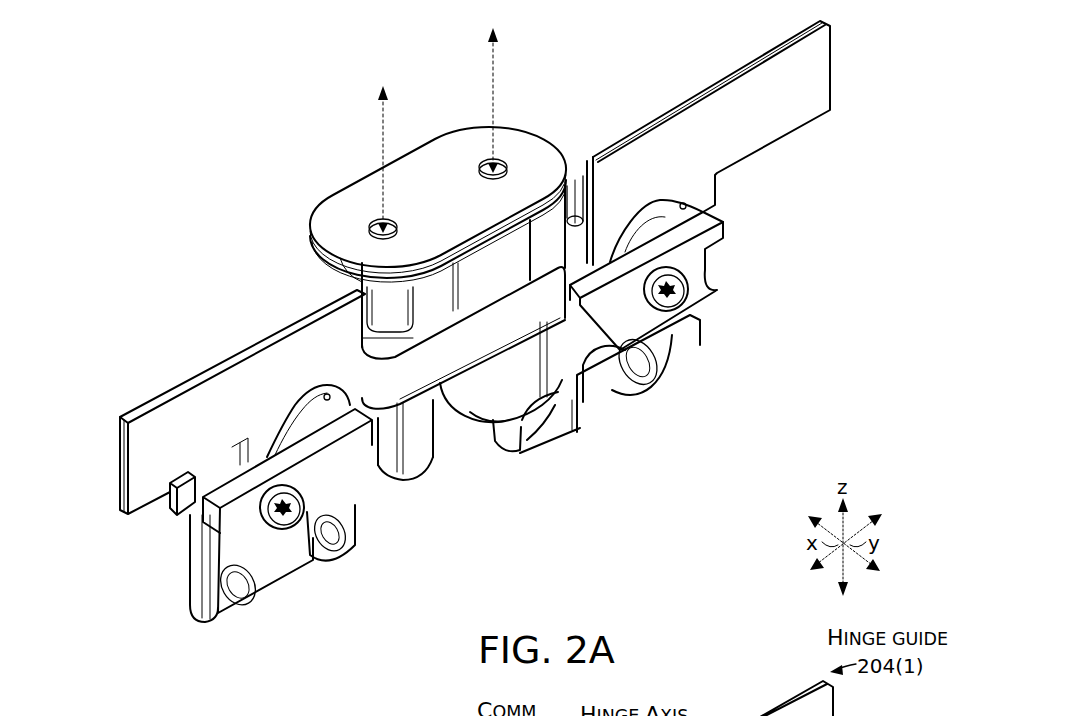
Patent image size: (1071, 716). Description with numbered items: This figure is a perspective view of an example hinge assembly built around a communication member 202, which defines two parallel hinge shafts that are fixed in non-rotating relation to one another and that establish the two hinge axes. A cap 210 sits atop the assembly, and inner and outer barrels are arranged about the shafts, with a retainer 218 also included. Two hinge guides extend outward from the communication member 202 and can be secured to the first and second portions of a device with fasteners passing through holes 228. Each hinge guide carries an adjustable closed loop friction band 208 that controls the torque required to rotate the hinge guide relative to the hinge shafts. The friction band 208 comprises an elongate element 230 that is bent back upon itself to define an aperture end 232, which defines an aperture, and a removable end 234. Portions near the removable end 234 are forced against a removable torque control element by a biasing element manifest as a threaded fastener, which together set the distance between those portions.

The communication member 202 is at (438, 118).
The adjustable closed loop friction band 208 is at (203, 531).
The cap 210 is at (347, 205).
The retainer 218 is at (522, 330).
The hole 228 is at (648, 378).
The elongate element 230 is at (377, 472).
The aperture end 232 is at (418, 478).
The removable end 234 is at (185, 525).